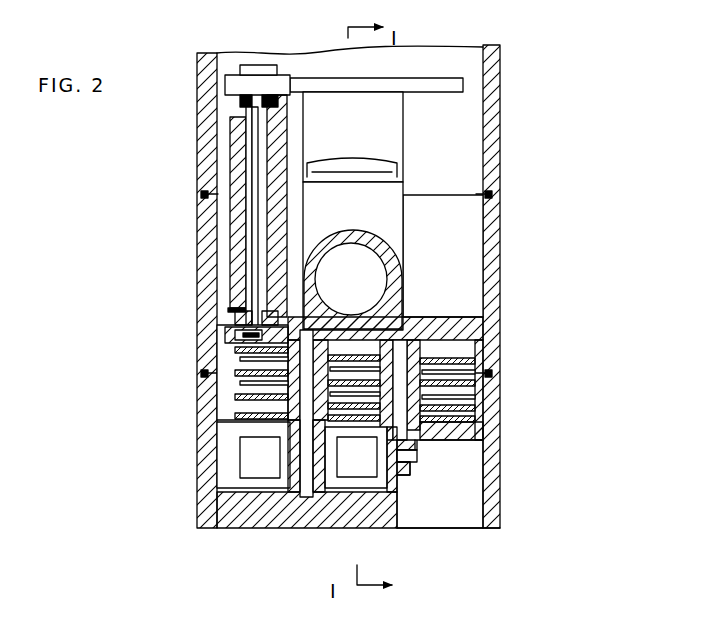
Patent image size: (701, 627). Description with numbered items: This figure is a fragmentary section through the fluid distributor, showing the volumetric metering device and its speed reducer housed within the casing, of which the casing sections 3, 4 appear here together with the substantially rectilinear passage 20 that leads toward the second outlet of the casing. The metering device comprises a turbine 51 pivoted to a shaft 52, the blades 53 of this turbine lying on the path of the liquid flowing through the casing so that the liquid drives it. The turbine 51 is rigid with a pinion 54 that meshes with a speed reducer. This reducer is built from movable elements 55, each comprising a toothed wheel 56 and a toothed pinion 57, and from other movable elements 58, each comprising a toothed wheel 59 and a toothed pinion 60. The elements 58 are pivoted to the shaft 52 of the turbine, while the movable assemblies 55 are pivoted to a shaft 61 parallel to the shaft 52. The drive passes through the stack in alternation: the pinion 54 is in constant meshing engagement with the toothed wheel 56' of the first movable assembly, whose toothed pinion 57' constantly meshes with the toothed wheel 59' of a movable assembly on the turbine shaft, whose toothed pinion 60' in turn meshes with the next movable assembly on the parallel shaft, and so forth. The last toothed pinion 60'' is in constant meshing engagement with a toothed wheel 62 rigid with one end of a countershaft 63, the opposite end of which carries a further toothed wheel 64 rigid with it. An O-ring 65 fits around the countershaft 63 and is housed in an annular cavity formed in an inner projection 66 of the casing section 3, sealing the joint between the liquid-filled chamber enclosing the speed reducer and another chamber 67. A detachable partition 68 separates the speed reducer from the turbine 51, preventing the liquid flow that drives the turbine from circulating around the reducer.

The casing section 3 is at (207, 220).
The casing section 4 is at (255, 150).
The rectilinear passage 20 is at (365, 270).
The turbine 51 is at (280, 465).
The shaft 52 is at (306, 492).
The blades 53 is at (360, 460).
The pinion 54 is at (203, 430).
The movable elements 55 is at (512, 405).
The toothed wheel 56 is at (507, 356).
The toothed wheel 56' is at (507, 430).
The toothed pinion 57 is at (427, 336).
The toothed pinion 57' is at (401, 412).
The movable elements 58 is at (118, 345).
The toothed wheel 59 is at (190, 390).
The toothed wheel 59' is at (189, 417).
The toothed pinion 60 is at (196, 346).
The toothed pinion 60' is at (195, 368).
The last toothed pinion 60'' is at (332, 311).
The shaft 61 is at (430, 415).
The toothed wheel 62 is at (240, 335).
The countershaft 63 is at (287, 160).
The toothed wheel 64 is at (285, 80).
The O-ring 65 is at (280, 100).
The inner projection 66 is at (245, 135).
The chamber 67 is at (430, 147).
The detachable partition 68 is at (370, 470).